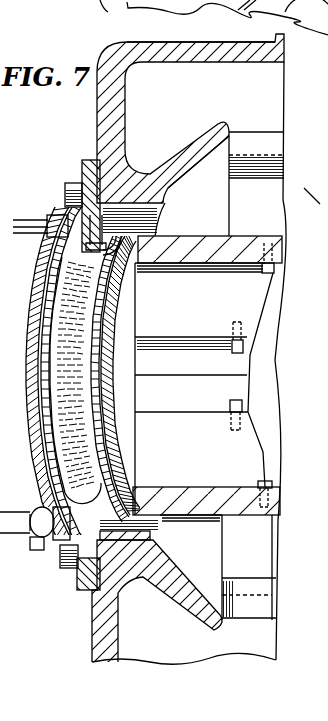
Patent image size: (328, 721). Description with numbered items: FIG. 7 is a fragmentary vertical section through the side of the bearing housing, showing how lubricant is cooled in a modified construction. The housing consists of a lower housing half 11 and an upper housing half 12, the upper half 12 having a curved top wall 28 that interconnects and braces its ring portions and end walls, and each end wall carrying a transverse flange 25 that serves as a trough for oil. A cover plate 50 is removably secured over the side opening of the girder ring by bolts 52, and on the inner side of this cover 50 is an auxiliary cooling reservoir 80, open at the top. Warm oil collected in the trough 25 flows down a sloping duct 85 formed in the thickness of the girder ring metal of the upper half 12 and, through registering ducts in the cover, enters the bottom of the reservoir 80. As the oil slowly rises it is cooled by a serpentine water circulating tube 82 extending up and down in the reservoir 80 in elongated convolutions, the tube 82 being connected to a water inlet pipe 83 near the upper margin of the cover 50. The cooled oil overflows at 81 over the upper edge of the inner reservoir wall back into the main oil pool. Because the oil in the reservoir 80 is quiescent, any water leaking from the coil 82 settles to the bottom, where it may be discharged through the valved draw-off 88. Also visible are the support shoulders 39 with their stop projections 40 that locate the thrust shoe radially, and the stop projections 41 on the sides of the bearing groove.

The lower housing half 11 is at (72, 653).
The upper housing half 12 is at (32, 173).
The transverse flange 25 is at (253, 155).
The top wall 28 is at (182, 44).
The support shoulders 39 is at (241, 247).
The stop projections 40 is at (263, 272).
The stop projections 41 is at (233, 349).
The cover plate 50 is at (88, 160).
The bolts 52 is at (80, 186).
The auxiliary cooling reservoir 80 is at (50, 300).
The overflow 81 is at (165, 262).
The serpentine water circulating tube 82 is at (87, 304).
The water inlet pipe 83 is at (28, 218).
The duct 85 is at (229, 155).
The valved draw-off 88 is at (33, 507).